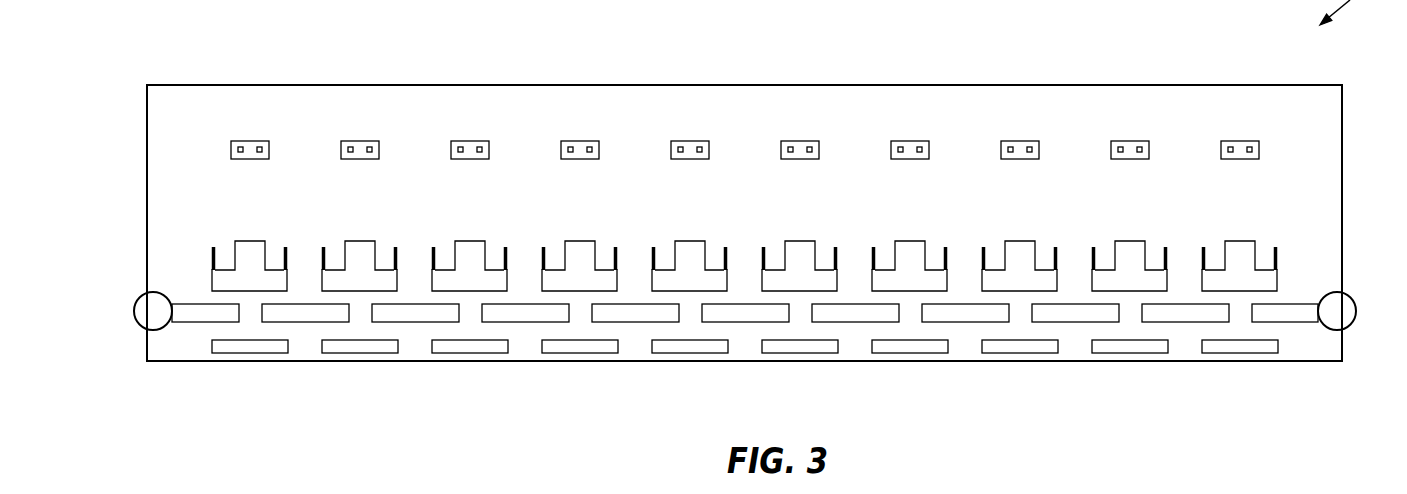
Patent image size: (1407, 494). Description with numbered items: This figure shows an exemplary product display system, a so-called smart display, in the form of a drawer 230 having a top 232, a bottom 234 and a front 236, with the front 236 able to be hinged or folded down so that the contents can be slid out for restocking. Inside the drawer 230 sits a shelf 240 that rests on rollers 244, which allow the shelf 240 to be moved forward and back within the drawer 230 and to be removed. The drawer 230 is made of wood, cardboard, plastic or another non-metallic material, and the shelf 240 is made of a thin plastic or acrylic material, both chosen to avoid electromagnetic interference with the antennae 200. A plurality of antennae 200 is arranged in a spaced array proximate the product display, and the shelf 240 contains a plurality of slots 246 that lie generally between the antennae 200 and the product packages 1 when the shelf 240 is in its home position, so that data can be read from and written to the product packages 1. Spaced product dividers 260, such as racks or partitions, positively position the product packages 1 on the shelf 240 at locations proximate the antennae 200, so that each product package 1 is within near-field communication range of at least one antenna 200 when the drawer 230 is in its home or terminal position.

The drawer 230 is at (1197, 85).
The top 232 is at (293, 85).
The bottom 234 is at (1308, 362).
The front 236 is at (1319, 140).
The shelf 240 is at (410, 315).
The rollers 244 is at (148, 315).
The slots 246 is at (798, 310).
The antennae 200 is at (272, 347).
The product dividers 260 is at (435, 279).
The product packages 1 is at (526, 256).